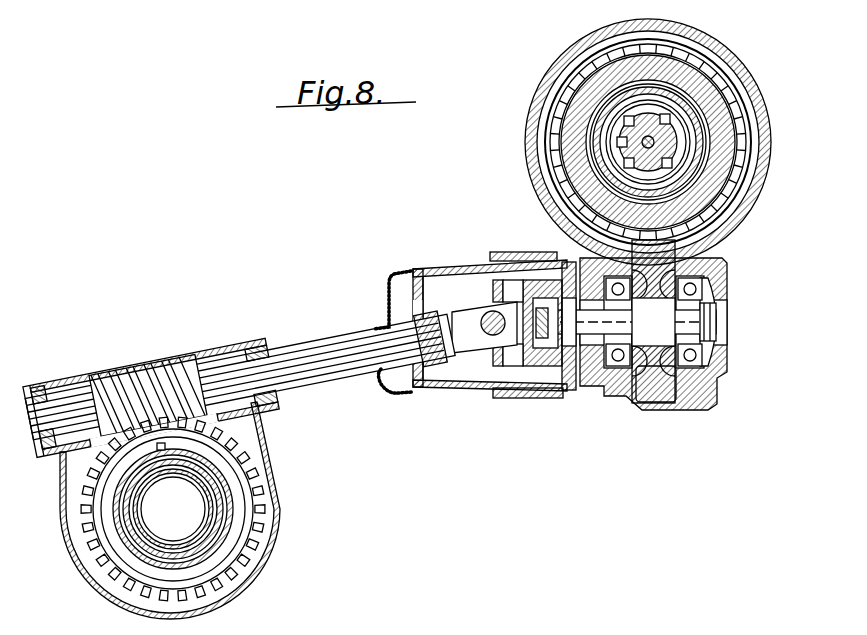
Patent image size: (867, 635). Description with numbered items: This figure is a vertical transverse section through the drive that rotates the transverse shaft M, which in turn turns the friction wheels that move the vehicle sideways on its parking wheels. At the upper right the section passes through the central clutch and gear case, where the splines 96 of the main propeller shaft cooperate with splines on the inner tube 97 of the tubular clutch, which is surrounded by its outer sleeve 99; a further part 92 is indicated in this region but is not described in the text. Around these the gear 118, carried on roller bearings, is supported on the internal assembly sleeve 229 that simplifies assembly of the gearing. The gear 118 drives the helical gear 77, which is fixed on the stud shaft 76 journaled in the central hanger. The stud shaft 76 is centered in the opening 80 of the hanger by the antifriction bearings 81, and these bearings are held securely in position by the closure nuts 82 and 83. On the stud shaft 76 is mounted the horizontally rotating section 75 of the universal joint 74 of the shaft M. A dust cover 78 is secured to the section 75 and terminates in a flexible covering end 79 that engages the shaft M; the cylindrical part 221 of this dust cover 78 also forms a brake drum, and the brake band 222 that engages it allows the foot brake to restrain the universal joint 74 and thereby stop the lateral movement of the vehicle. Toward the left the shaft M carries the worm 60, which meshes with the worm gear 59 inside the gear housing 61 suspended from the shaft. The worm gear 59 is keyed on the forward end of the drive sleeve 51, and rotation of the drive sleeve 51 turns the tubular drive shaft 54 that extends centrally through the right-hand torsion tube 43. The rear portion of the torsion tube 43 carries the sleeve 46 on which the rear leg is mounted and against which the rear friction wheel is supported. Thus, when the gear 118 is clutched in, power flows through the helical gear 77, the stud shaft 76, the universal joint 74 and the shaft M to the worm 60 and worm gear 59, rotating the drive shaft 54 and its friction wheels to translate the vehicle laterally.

The hub 92 is at (705, 109).
The splines 96 is at (680, 142).
The gear 118 is at (705, 142).
The outer sleeve 99 is at (709, 142).
The inner tube 97 is at (728, 155).
The assembly sleeve 229 is at (672, 142).
The stud shaft 76 is at (722, 260).
The closure nut 83 is at (728, 290).
The antifriction bearings 81 is at (722, 364).
The helical gear 77 is at (662, 402).
The opening 80 is at (636, 372).
The horizontally rotating section 75 is at (572, 362).
The cylindrical part 221 is at (524, 390).
The universal joint 74 is at (497, 375).
The closure nut 82 is at (560, 262).
The brake band 222 is at (508, 255).
The dust cover 78 is at (462, 268).
The flexible covering end 79 is at (386, 297).
The transverse shaft M is at (237, 362).
The worm 60 is at (146, 376).
The gear housing 61 is at (267, 440).
The worm gear 59 is at (203, 509).
The sleeve 46 is at (211, 506).
The torsion tube 43 is at (210, 528).
The drive sleeve 51 is at (191, 547).
The tubular drive shaft 54 is at (160, 526).